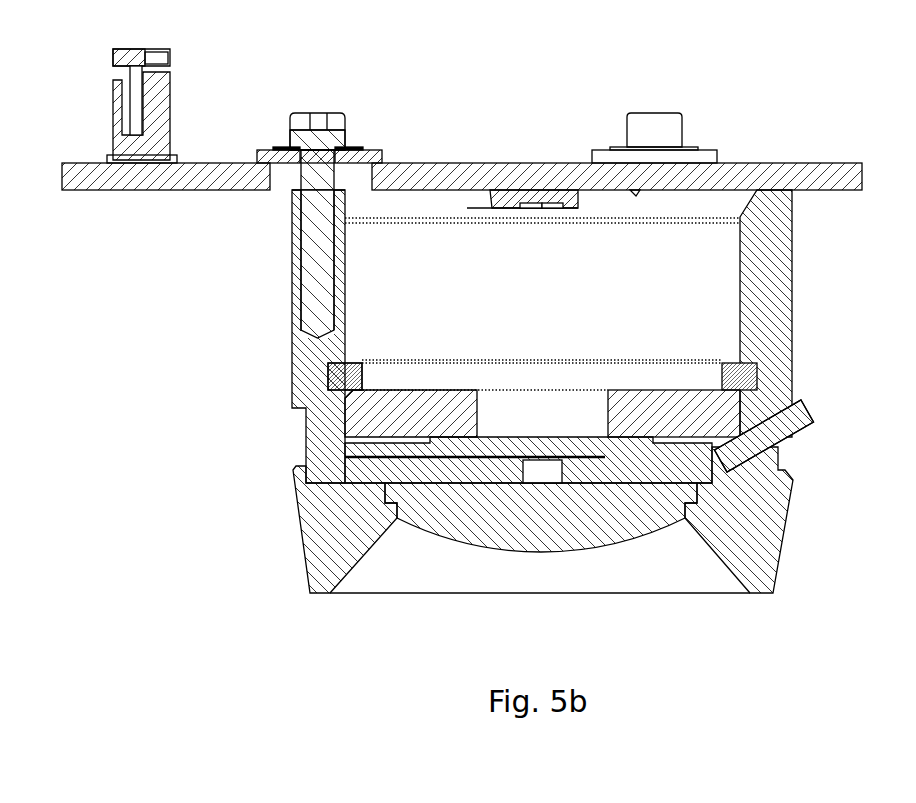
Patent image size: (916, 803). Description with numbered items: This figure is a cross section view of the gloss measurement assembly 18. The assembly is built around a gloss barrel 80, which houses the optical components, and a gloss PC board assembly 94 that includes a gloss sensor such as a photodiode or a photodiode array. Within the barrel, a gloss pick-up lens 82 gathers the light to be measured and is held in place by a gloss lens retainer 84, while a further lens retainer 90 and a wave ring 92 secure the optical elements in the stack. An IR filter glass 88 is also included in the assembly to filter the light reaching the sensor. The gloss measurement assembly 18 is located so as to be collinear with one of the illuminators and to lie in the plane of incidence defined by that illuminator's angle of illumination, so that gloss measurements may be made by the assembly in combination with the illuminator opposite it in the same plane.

The gloss measurement assembly 18 is at (888, 263).
The gloss barrel 80 is at (790, 493).
The gloss pick-up lens 82 is at (462, 530).
The gloss lens retainer 84 is at (348, 456).
The IR filter glass 88 is at (630, 437).
The lens retainer 90 is at (358, 418).
The wave ring 92 is at (742, 362).
The gloss PC board assembly 94 is at (778, 168).